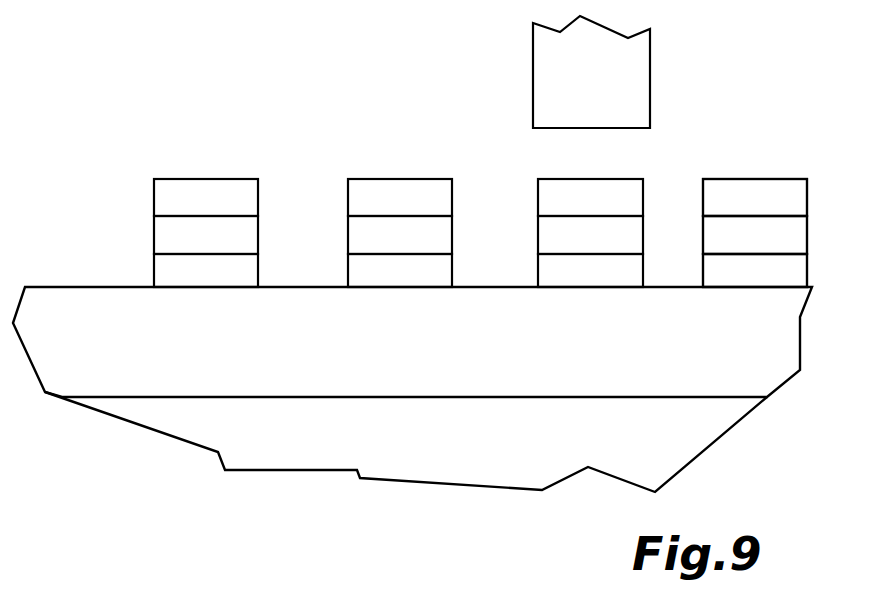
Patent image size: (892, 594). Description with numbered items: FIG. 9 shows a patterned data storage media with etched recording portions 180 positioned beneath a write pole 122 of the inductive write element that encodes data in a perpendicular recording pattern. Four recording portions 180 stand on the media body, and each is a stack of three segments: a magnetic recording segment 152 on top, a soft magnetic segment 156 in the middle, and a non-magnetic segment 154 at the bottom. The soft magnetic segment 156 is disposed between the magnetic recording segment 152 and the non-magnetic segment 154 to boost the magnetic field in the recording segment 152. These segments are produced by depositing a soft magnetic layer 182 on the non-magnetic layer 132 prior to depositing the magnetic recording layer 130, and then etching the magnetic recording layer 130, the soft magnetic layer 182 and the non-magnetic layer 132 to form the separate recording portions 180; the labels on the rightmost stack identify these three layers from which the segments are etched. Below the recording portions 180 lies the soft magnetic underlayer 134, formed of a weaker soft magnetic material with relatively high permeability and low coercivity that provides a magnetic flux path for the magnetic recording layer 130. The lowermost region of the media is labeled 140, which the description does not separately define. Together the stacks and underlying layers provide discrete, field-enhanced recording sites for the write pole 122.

The write pole 122 is at (650, 72).
The magnetic recording layer 130 is at (820, 196).
The non-magnetic layer 132 is at (788, 269).
The soft magnetic underlayer 134 is at (767, 331).
The substrate / base 140 is at (406, 442).
The magnetic recording segment 152 is at (480, 197).
The non-magnetic segment 154 is at (480, 270).
The soft magnetic segment 156 is at (480, 235).
The recording portion 180 is at (480, 203).
The soft magnetic layer 182 is at (818, 239).